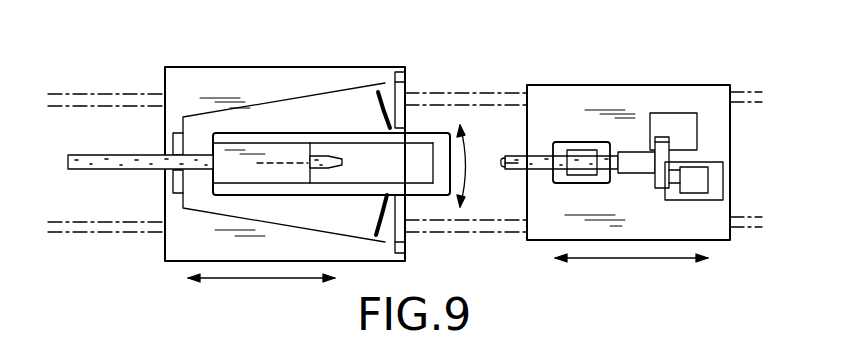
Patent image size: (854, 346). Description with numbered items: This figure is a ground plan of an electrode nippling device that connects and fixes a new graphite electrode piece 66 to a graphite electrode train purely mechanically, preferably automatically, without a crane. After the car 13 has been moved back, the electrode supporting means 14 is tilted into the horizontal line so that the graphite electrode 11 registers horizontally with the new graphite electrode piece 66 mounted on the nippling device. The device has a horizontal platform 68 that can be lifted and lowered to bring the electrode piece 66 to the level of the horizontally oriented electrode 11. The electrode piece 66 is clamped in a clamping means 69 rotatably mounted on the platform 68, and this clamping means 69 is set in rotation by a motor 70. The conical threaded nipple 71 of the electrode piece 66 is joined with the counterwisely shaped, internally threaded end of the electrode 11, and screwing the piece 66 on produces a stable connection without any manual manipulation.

The graphite electrode 11 is at (100, 153).
The car 13 is at (182, 242).
The electrode supporting means 14 is at (236, 118).
The graphite electrode piece 66 is at (537, 157).
The horizontal platform 68 is at (547, 92).
The clamping means 69 is at (635, 153).
The motor 70 is at (700, 182).
The conical threaded nipple 71 is at (503, 166).